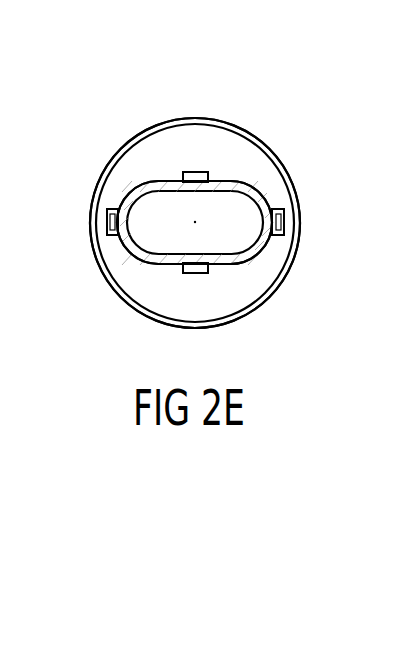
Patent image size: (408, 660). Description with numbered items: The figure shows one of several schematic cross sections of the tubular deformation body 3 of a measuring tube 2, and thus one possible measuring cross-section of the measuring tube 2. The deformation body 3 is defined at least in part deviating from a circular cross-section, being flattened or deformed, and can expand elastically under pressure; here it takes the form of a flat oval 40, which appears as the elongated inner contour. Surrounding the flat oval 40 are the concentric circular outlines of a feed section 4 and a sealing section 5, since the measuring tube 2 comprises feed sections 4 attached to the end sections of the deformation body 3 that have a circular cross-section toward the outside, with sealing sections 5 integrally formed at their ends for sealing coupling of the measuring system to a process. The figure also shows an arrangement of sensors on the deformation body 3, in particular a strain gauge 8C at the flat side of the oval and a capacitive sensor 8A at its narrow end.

The measuring tube 2 is at (220, 100).
The sealing section 5 is at (258, 139).
The feed section 4 is at (114, 286).
The deformation body 3 is at (264, 246).
The flat oval 40 is at (265, 199).
The strain gauge 8C is at (195, 172).
The capacitive sensor 8A is at (107, 221).